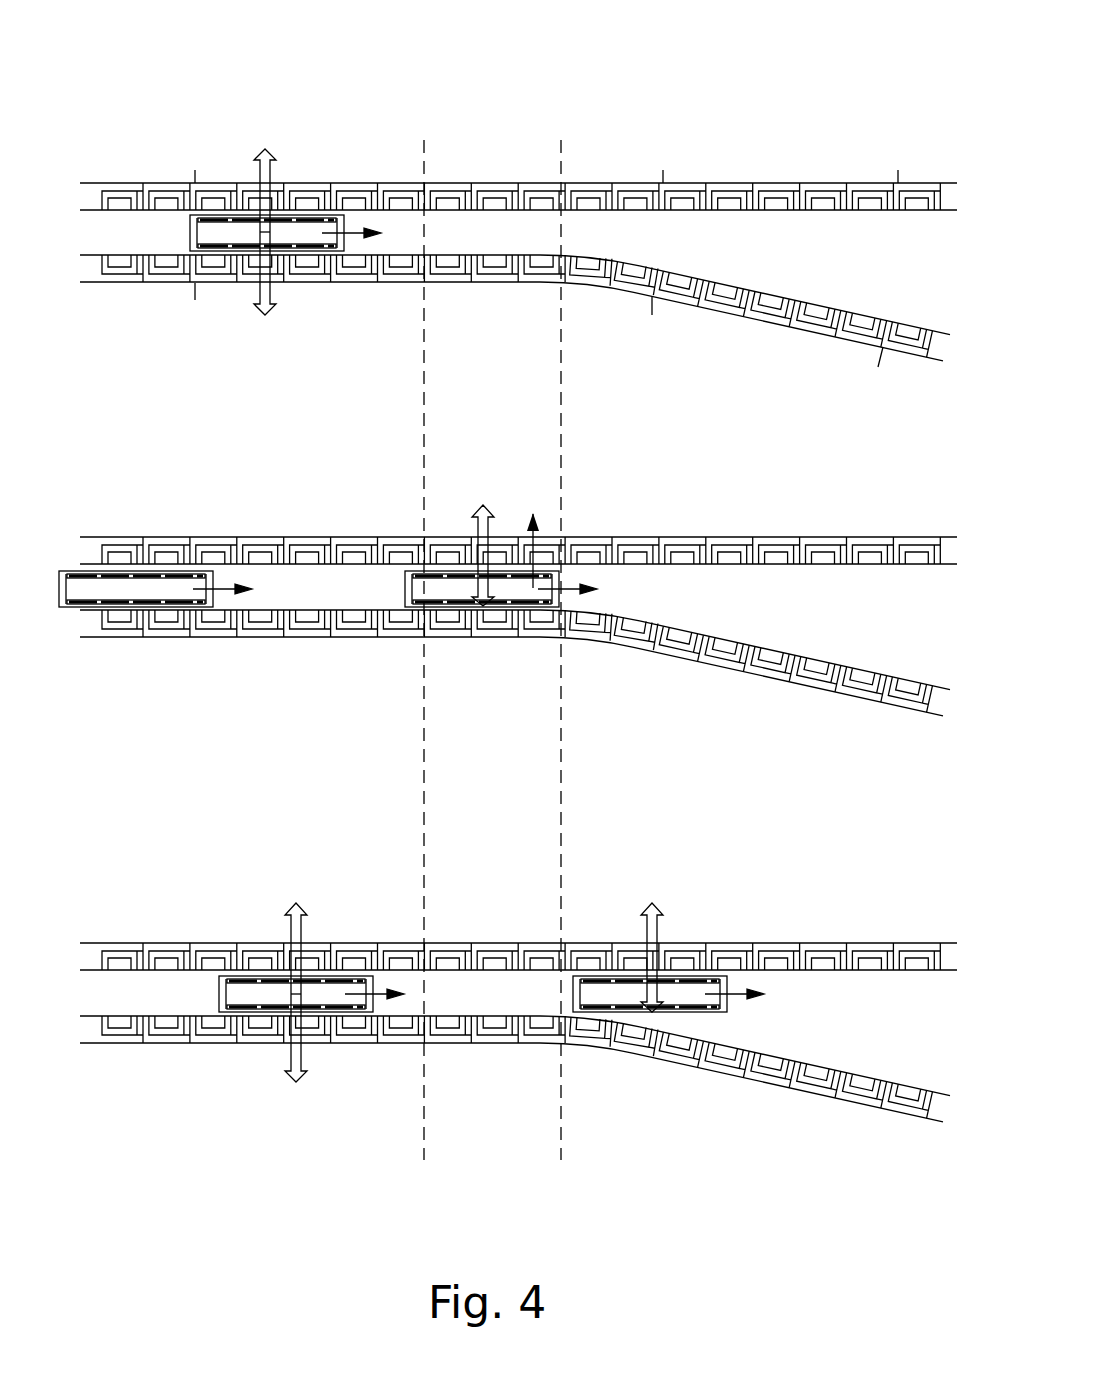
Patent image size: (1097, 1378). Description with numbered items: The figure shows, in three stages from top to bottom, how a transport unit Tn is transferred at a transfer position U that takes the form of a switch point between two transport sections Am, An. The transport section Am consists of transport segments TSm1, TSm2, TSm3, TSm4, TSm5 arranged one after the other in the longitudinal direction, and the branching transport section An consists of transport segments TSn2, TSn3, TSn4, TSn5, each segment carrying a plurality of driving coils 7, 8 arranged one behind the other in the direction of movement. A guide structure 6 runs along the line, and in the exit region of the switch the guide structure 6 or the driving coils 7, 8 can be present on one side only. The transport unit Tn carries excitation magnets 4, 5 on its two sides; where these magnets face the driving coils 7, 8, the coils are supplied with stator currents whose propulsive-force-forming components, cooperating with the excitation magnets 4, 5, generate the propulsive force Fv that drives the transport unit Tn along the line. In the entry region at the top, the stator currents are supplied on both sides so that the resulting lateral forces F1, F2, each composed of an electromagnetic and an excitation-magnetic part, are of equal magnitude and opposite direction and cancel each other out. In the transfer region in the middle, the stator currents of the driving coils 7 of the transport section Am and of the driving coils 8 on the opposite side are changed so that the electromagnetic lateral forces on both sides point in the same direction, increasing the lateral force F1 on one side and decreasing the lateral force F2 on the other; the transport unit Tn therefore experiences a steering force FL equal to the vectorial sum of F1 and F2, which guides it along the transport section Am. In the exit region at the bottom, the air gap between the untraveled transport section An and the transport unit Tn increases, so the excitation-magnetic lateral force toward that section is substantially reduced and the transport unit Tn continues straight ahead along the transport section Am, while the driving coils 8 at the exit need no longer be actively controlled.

The excitation magnet 4 is at (247, 218).
The excitation magnet 5 is at (243, 252).
The guide structure 6 is at (507, 330).
The driving coils 7 is at (168, 200).
The driving coils 8 is at (818, 313).
The transport unit Tn is at (205, 225).
The transport segment TSm1 is at (94, 183).
The transport segment TSm2 is at (313, 183).
The transport segment TSm3 is at (592, 183).
The transport segment TSm4 is at (738, 183).
The transport segment TSm5 is at (947, 183).
The transport segment TSn2 is at (337, 283).
The transport segment TSn3 is at (577, 285).
The transport segment TSn4 is at (849, 343).
The transport segment TSn5 is at (934, 332).
The transport section Am is at (127, 103).
The transport section An is at (688, 350).
The transfer position U is at (522, 130).
The resulting lateral force F1 is at (263, 148).
The resulting lateral force F2 is at (265, 316).
The propulsive force Fv is at (495, 619).
The steering force FL is at (540, 532).